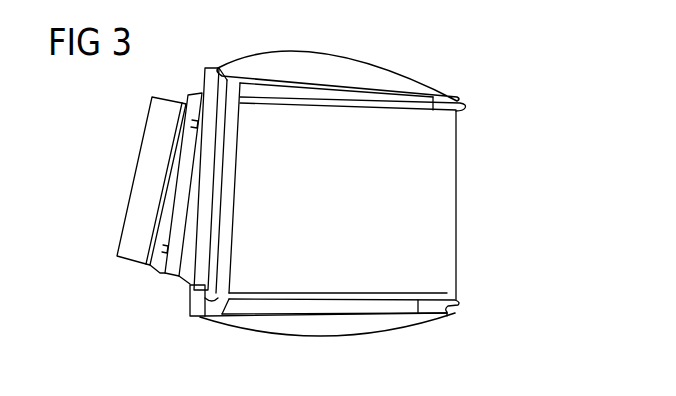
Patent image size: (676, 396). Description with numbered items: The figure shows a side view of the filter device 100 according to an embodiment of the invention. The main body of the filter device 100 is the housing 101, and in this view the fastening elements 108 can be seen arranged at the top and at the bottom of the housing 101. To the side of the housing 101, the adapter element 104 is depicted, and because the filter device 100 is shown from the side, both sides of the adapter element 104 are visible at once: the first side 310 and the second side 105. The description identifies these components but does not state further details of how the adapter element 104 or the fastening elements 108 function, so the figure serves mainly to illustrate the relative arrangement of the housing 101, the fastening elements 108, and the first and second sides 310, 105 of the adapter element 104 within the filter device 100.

The filter device 100 is at (497, 108).
The housing 101 is at (442, 199).
The adapter element 104 is at (120, 255).
The second side 105 is at (131, 168).
The fastening elements 108 is at (437, 89).
The first side 310 is at (224, 218).